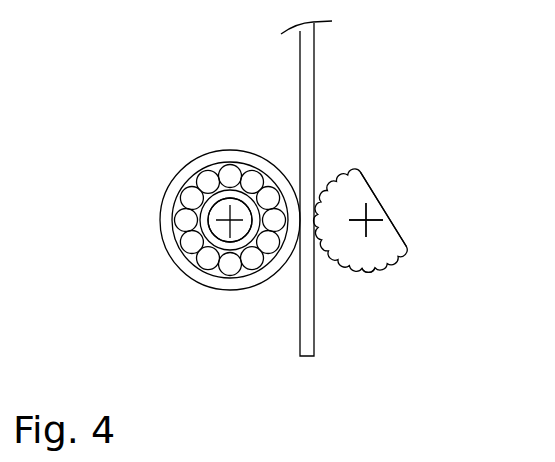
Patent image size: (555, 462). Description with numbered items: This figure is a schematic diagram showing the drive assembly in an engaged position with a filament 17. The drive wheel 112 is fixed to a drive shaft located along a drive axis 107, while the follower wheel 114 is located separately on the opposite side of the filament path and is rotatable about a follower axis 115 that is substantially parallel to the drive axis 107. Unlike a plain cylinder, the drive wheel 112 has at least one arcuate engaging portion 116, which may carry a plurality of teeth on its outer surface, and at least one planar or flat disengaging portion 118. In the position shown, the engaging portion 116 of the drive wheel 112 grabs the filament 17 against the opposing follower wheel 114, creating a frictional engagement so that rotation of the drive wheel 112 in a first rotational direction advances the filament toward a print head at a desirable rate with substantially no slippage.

The filament 17 is at (313, 100).
The follower wheel 114 is at (223, 296).
The follower axis 115 is at (229, 221).
The drive wheel 112 is at (412, 237).
The disengaging portion 118 is at (369, 184).
The drive axis 107 is at (367, 212).
The engaging portion 116 is at (372, 272).